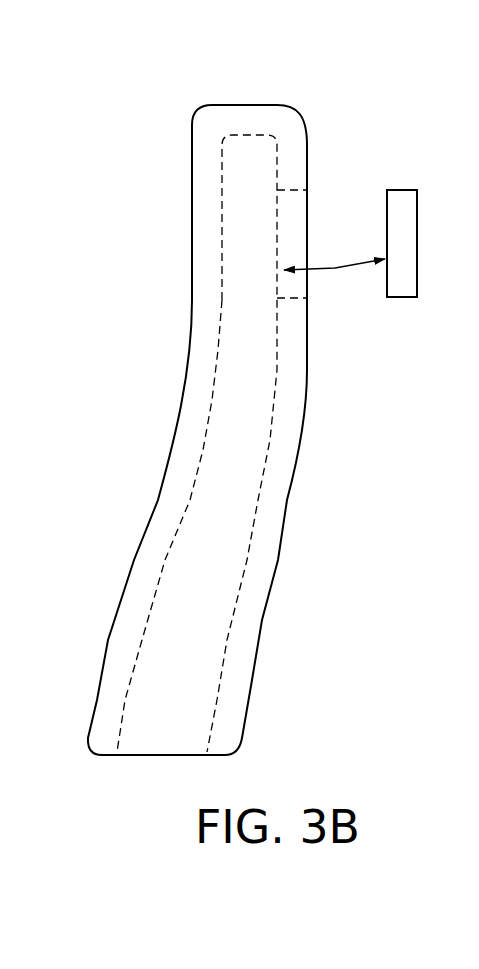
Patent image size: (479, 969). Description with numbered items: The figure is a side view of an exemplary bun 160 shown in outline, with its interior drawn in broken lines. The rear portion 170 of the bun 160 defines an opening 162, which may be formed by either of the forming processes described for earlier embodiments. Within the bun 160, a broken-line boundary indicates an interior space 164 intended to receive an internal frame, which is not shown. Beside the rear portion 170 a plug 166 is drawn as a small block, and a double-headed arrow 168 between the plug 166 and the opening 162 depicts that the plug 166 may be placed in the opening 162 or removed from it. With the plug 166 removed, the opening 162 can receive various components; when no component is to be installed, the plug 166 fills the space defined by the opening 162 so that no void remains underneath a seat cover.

The bun 160 is at (174, 131).
The opening 162 is at (289, 213).
The interior space 164 is at (221, 503).
The plug 166 is at (403, 298).
The arrow 168 is at (345, 266).
The rear portion 170 is at (309, 320).